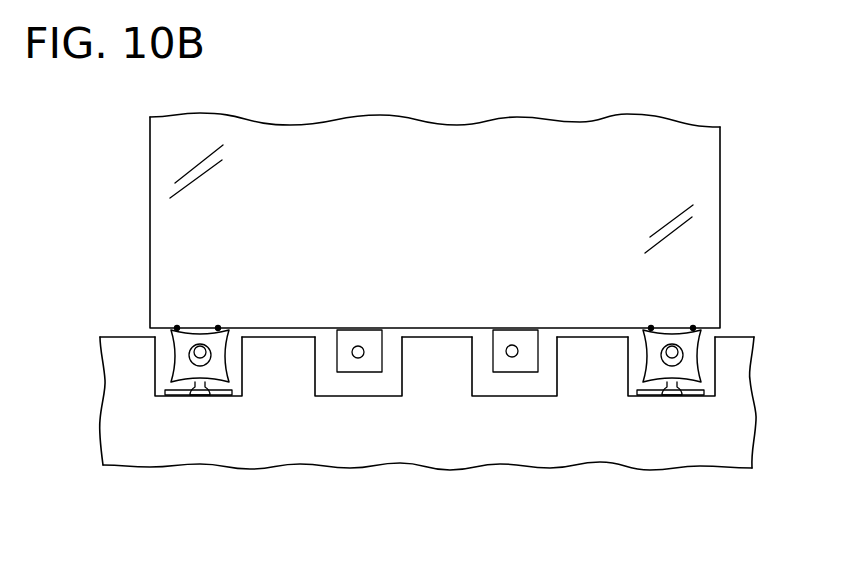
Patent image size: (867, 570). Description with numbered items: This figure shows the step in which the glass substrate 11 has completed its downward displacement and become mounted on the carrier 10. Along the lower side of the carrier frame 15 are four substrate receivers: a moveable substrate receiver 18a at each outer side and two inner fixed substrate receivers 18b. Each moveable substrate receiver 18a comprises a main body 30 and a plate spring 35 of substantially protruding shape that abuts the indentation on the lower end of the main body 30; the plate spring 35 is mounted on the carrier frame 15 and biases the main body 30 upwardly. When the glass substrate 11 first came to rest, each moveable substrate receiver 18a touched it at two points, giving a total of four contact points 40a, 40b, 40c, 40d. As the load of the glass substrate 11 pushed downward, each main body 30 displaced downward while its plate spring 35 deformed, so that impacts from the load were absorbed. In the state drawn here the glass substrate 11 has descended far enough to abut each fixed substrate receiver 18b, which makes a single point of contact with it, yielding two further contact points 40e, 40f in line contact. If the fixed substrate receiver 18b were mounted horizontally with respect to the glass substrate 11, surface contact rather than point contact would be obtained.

The carrier 10 is at (740, 442).
The glass substrate 11 is at (702, 170).
The carrier frame 15 is at (130, 441).
The moveable substrate receiver 18a is at (158, 342).
The fixed substrate receiver 18b is at (366, 365).
The main body 30 is at (175, 373).
The plate spring 35 is at (181, 393).
The contact point 40a is at (177, 328).
The contact point 40b is at (218, 328).
The contact point 40c is at (651, 328).
The contact point 40d is at (693, 328).
The contact point 40e is at (338, 328).
The contact point 40f is at (534, 328).